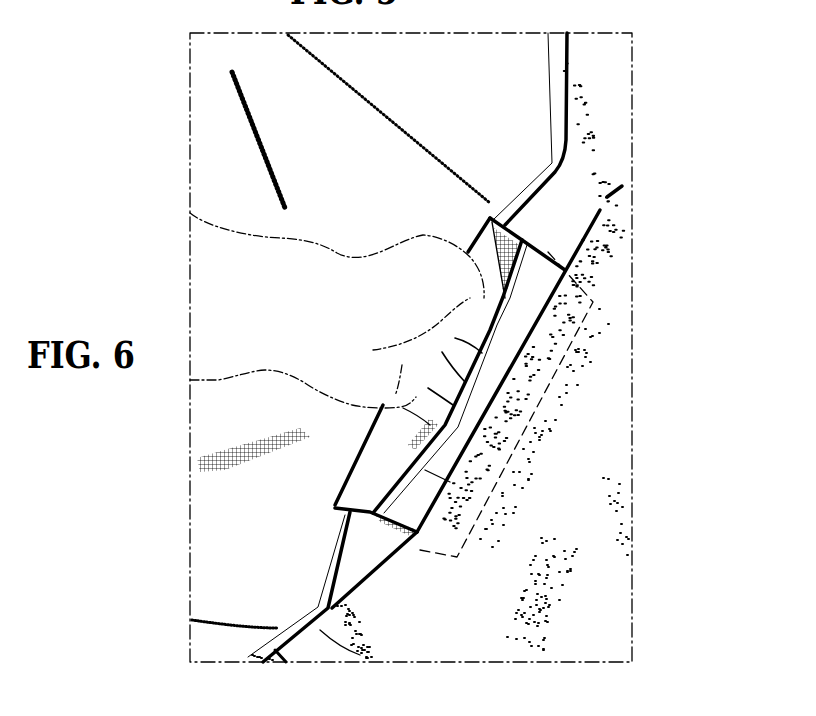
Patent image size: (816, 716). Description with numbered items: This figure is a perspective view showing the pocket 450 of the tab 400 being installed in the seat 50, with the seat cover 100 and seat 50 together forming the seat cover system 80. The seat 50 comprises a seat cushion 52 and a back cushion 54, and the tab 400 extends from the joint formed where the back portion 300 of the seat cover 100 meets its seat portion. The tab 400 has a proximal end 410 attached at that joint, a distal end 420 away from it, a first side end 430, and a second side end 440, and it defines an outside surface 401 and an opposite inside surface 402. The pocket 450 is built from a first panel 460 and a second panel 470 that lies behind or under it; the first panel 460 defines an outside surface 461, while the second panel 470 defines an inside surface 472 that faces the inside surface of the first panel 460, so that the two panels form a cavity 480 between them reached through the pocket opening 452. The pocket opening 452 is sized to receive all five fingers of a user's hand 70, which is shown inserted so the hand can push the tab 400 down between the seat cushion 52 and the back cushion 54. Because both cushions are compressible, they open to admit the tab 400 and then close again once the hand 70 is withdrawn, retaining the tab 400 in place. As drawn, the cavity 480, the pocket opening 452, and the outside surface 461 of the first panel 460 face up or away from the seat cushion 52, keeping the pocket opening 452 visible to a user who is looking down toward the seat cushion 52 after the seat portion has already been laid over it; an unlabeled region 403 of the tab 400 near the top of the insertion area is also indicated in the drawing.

The seat cover system 80 is at (153, 528).
The seat cover 100 is at (627, 112).
The back portion 300 is at (500, 97).
The seat 50 is at (665, 135).
The seat cushion 52 is at (600, 127).
The channel upper end wall 403 is at (513, 232).
The pocket opening 452 is at (486, 238).
The second side end 440 is at (545, 263).
The outside surface 401 is at (520, 300).
The user's hand 70 is at (410, 286).
The cavity 480 is at (489, 298).
The second panel 470 is at (303, 437).
The inside surface 472 is at (387, 420).
The distal end 420 is at (530, 420).
The back cushion 54 is at (580, 490).
The proximal end 410 is at (378, 447).
The inside surface 402 is at (378, 467).
The pocket 450 is at (440, 454).
The first panel 460 is at (584, 532).
The outside surface 461 is at (423, 472).
The tab 400 is at (420, 508).
The first side end 430 is at (418, 533).